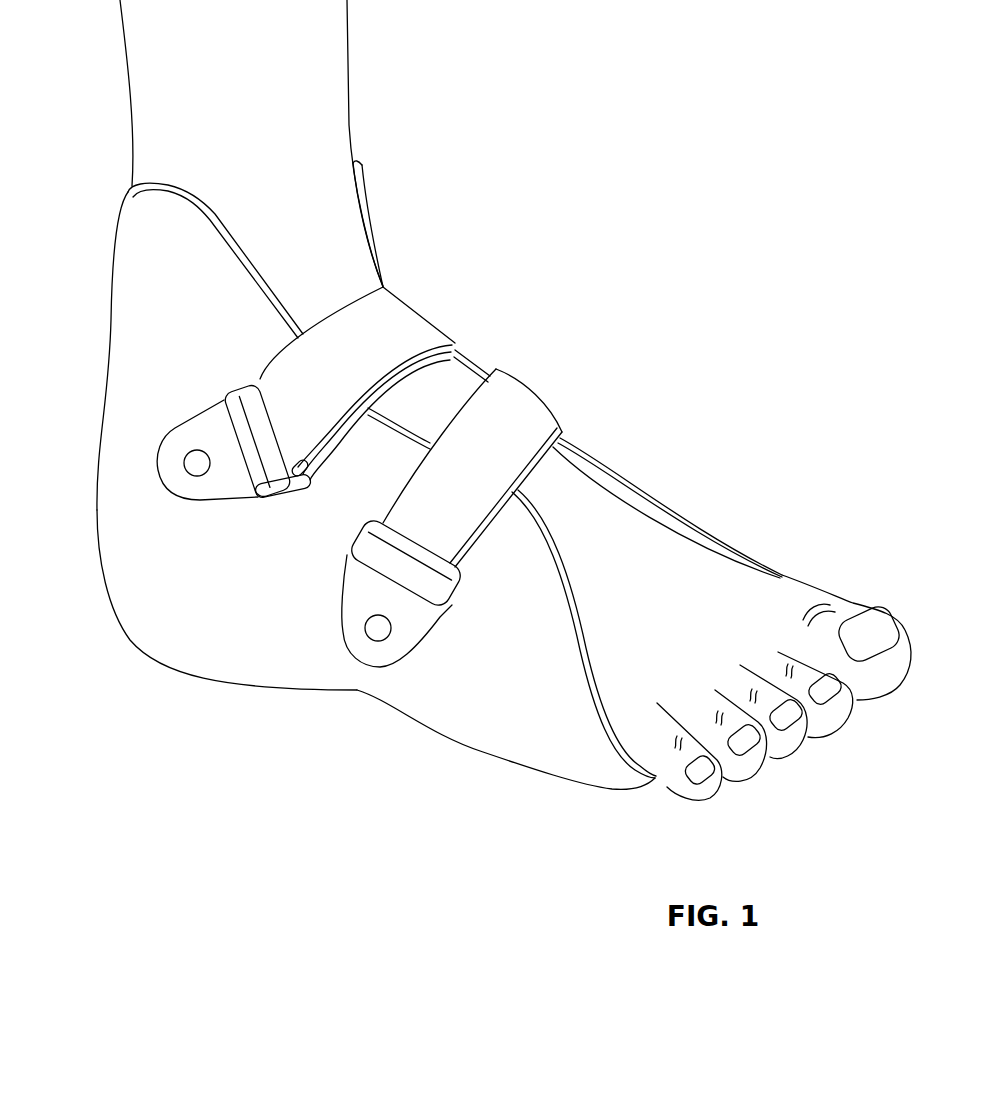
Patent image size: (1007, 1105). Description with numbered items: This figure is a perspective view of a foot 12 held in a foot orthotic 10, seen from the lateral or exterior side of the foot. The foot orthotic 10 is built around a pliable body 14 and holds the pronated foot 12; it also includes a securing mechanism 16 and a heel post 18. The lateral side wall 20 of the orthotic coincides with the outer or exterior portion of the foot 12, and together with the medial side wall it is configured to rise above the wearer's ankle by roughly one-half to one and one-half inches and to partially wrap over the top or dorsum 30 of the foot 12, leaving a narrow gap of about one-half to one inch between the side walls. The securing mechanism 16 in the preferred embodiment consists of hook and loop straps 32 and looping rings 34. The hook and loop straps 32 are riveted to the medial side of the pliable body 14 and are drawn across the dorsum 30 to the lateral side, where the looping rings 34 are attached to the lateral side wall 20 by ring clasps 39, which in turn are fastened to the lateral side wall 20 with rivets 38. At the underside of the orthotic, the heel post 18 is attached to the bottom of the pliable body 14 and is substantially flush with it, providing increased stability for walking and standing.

The foot orthotic 10 is at (650, 318).
The foot 12 is at (688, 562).
The pliable body 14 is at (90, 272).
The securing mechanism 16 is at (462, 262).
The heel post 18 is at (224, 688).
The lateral side wall 20 is at (297, 620).
The dorsum 30 is at (455, 373).
The hook and loop straps 32 is at (388, 300).
The looping rings 34 is at (240, 387).
The rivets 38 is at (197, 463).
The ring clasps 39 is at (212, 430).